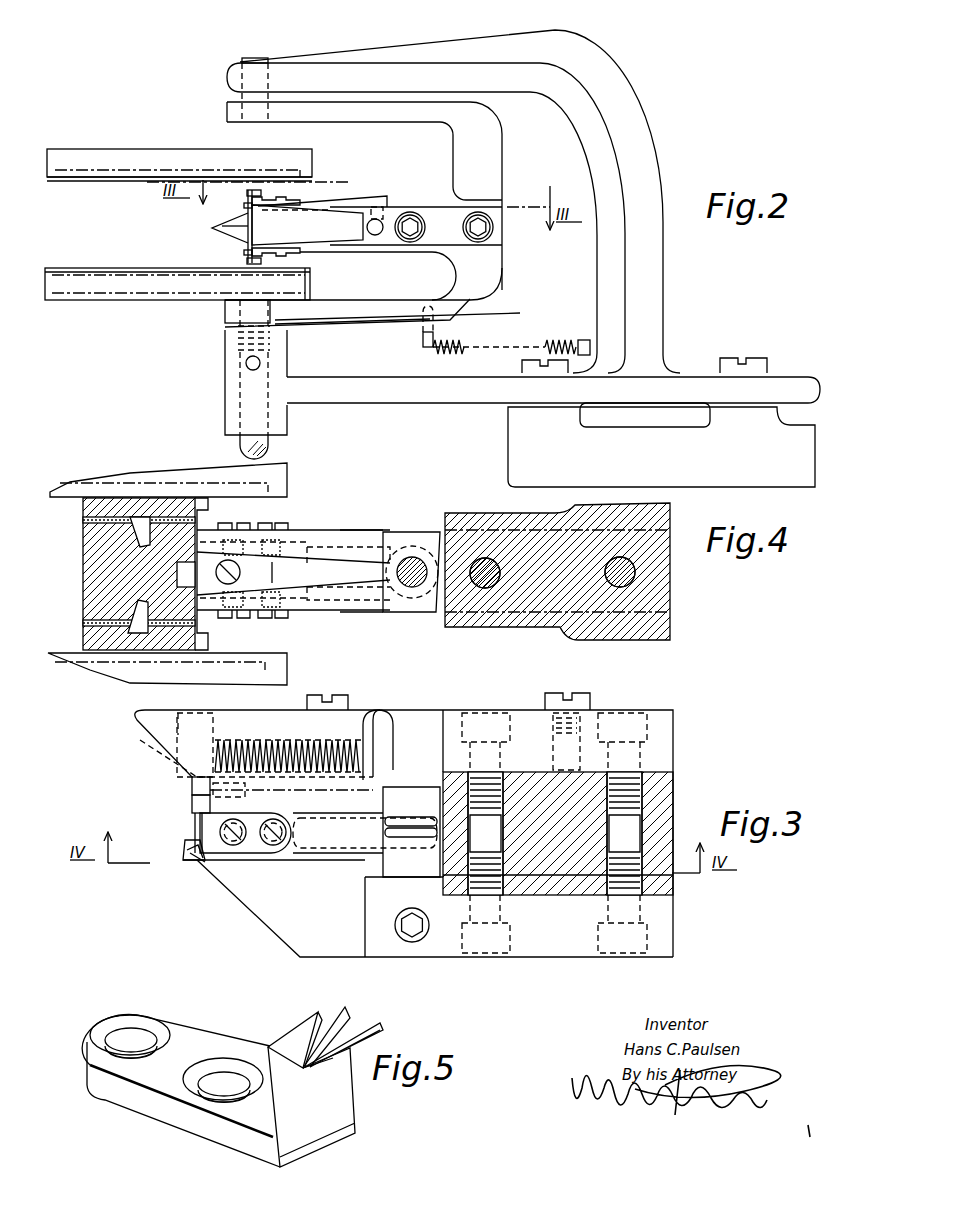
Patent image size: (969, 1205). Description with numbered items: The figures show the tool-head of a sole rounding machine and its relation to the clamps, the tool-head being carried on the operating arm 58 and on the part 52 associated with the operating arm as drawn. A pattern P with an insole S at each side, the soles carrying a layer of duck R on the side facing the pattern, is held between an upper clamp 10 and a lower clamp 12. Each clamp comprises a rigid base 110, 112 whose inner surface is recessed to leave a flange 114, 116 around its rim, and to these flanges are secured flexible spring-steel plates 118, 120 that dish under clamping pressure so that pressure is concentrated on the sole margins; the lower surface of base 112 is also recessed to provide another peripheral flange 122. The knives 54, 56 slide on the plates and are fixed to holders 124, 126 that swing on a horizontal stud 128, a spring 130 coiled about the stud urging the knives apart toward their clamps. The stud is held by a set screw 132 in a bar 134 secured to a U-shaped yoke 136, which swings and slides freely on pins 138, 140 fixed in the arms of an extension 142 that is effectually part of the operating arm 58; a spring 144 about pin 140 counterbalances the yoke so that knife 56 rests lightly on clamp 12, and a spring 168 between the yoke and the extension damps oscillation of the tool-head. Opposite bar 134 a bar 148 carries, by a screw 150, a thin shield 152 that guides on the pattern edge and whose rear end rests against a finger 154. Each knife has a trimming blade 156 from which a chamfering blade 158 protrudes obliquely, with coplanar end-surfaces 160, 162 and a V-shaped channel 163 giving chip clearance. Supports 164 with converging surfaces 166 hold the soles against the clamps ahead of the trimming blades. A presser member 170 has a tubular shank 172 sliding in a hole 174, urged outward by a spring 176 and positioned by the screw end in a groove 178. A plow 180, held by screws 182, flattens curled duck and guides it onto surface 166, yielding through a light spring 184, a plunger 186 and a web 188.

In FIG. 2, the upper clamp 10 is at (107, 160).
In FIG. 4, the upper clamp 10 is at (290, 470).
In FIG. 2, the lower clamp 12 is at (123, 288).
In FIG. 4, the lower clamp 12 is at (288, 673).
In FIG. 2, the arm 52 is at (516, 121).
In FIG. 2, the upper knife 54 is at (262, 199).
In FIG. 4, the upper knife 54 is at (212, 514).
In FIG. 3, the upper knife 54 is at (258, 845).
In FIG. 5, the upper knife 54 is at (189, 1045).
In FIG. 2, the lower knife 56 is at (297, 253).
In FIG. 4, the lower knife 56 is at (217, 628).
In FIG. 2, the operating arm 58 is at (656, 478).
In FIG. 2, the base of upper clamp 110 is at (167, 168).
In FIG. 4, the base of upper clamp 110 is at (102, 482).
In FIG. 2, the base of lower clamp 112 is at (193, 288).
In FIG. 4, the base of lower clamp 112 is at (115, 666).
In FIG. 2, the flange of upper base 114 is at (312, 175).
In FIG. 4, the flange of upper base 114 is at (285, 493).
In FIG. 2, the flange of lower base 116 is at (310, 273).
In FIG. 4, the flange of lower base 116 is at (288, 656).
In FIG. 2, the spring-steel plate 118 is at (85, 182).
In FIG. 4, the spring-steel plate 118 is at (72, 491).
In FIG. 2, the spring-steel plate 120 is at (98, 267).
In FIG. 4, the spring-steel plate 120 is at (75, 655).
In FIG. 2, the peripheral flange 122 is at (310, 292).
In FIG. 2, the knife holder 124 is at (330, 208).
In FIG. 4, the knife holder 124 is at (310, 537).
In FIG. 3, the knife holder 124 is at (286, 848).
In FIG. 2, the knife holder 126 is at (330, 249).
In FIG. 4, the knife holder 126 is at (307, 602).
In FIG. 3, the knife holder 126 is at (422, 916).
In FIG. 2, the horizontal stud 128 is at (378, 236).
In FIG. 4, the horizontal stud 128 is at (413, 568).
In FIG. 3, the horizontal stud 128 is at (393, 907).
In FIG. 4, the spring 130 is at (376, 547).
In FIG. 3, the spring 130 is at (412, 830).
In FIG. 2, the set screw 132 is at (380, 206).
In FIG. 3, the set screw 132 is at (392, 872).
In FIG. 2, the bar 134 is at (437, 232).
In FIG. 3, the bar 134 is at (553, 945).
In FIG. 2, the U-shaped yoke 136 is at (494, 283).
In FIG. 4, the U-shaped yoke 136 is at (655, 595).
In FIG. 3, the U-shaped yoke 136 is at (664, 793).
In FIG. 2, the pin 138 is at (246, 98).
In FIG. 2, the pin 140 is at (240, 384).
In FIG. 2, the extension 142 is at (598, 97).
In FIG. 2, the spring 144 is at (277, 323).
In FIG. 4, the bar 148 is at (341, 557).
In FIG. 3, the bar 148 is at (528, 720).
In FIG. 4, the screw 150 is at (272, 573).
In FIG. 3, the screw 150 is at (250, 792).
In FIG. 2, the shield 152 is at (252, 226).
In FIG. 4, the shield 152 is at (178, 570).
In FIG. 3, the shield 152 is at (195, 828).
In FIG. 3, the finger 154 is at (195, 855).
In FIG. 2, the trimming blade 156 is at (245, 205).
In FIG. 3, the trimming blade 156 is at (195, 822).
In FIG. 5, the trimming blade 156 is at (277, 1105).
In FIG. 2, the chamfering blade 158 is at (249, 193).
In FIG. 4, the chamfering blade 158 is at (173, 500).
In FIG. 3, the chamfering blade 158 is at (192, 838).
In FIG. 5, the chamfering blade 158 is at (327, 1058).
In FIG. 3, the end-surface 160 is at (222, 848).
In FIG. 5, the end-surface 160 is at (298, 1030).
In FIG. 3, the end-surface 162 is at (186, 848).
In FIG. 5, the end-surface 162 is at (362, 1027).
In FIG. 3, the V-shaped channel 163 is at (189, 851).
In FIG. 5, the V-shaped channel 163 is at (315, 1023).
In FIG. 3, the support 164 is at (192, 805).
In FIG. 3, the converging surface 166 is at (192, 787).
In FIG. 2, the spring 168 is at (532, 339).
In FIG. 3, the presser member 170 is at (150, 746).
In FIG. 3, the tubular shank 172 is at (318, 708).
In FIG. 3, the hole 174 is at (352, 722).
In FIG. 3, the spring 176 is at (387, 726).
In FIG. 3, the groove 178 is at (177, 770).
In FIG. 2, the plow 180 is at (215, 234).
In FIG. 3, the plow 180 is at (134, 716).
In FIG. 3, the screw 182 is at (342, 694).
In FIG. 3, the light spring 184 is at (270, 730).
In FIG. 3, the plunger 186 is at (220, 728).
In FIG. 2, the web 188 is at (237, 224).
In FIG. 3, the web 188 is at (180, 735).
In FIG. 4, the pattern P is at (92, 572).
In FIG. 4, the layer of duck R is at (85, 623).
In FIG. 4, the insole S is at (83, 513).